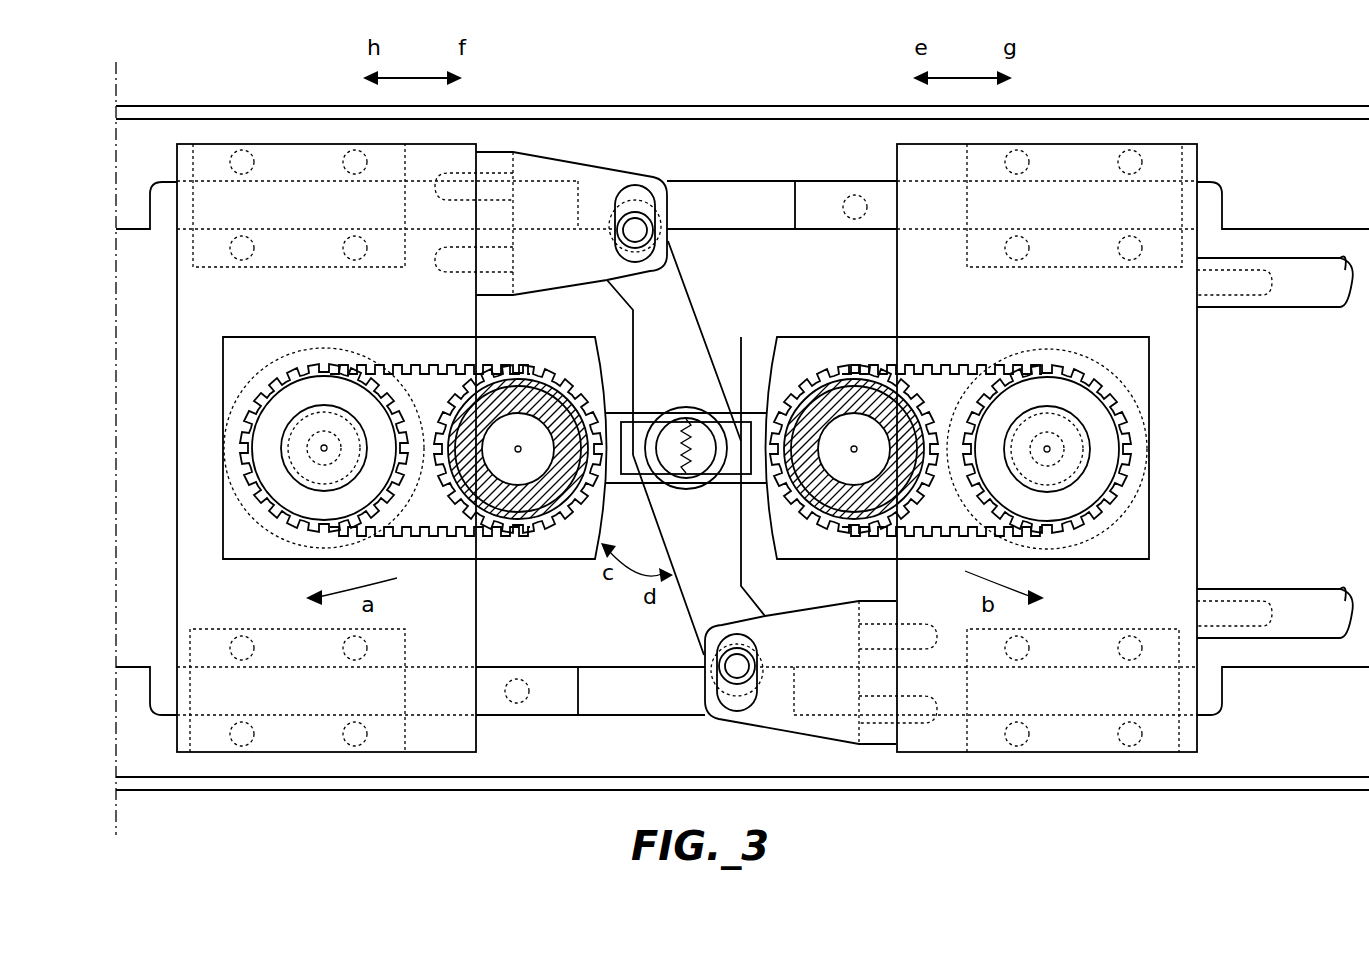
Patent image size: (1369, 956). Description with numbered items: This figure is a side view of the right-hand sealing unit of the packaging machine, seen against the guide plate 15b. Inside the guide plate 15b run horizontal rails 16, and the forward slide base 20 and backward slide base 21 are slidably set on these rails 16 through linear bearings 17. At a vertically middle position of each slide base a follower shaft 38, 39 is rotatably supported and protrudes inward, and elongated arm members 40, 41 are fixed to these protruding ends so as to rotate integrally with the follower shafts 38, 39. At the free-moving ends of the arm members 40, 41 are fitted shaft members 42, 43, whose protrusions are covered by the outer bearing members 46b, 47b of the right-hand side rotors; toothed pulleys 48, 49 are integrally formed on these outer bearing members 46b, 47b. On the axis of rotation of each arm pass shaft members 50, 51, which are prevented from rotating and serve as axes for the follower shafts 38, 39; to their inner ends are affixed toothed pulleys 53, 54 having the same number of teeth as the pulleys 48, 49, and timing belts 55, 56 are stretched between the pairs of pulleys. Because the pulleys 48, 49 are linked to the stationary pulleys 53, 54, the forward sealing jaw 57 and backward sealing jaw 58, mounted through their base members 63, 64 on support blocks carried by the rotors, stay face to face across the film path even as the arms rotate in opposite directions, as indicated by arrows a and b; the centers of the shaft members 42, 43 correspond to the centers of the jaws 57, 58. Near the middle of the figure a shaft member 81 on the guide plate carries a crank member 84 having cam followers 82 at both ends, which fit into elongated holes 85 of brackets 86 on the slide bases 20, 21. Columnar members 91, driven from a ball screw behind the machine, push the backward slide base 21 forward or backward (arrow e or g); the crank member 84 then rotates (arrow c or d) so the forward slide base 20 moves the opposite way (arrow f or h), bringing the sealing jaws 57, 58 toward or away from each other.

The guide plate 15b is at (770, 116).
The rail 16 is at (520, 200).
The linear bearing 17 is at (295, 165).
The slide base 20 is at (190, 470).
The slide base 21 is at (1200, 447).
The follower shaft 38 is at (317, 352).
The follower shaft 39 is at (1060, 345).
The arm member 40 is at (262, 350).
The arm member 41 is at (1125, 350).
The shaft member 42 is at (520, 496).
The shaft member 43 is at (852, 505).
The outer bearing member 46b is at (525, 512).
The outer bearing member 47b is at (850, 495).
The toothed pulley 48 is at (545, 367).
The toothed pulley 49 is at (827, 368).
The shaft member 50 is at (305, 468).
The shaft member 51 is at (1055, 465).
The toothed pulley 53 is at (312, 507).
The toothed pulley 54 is at (1047, 510).
The timing belt 55 is at (445, 365).
The timing belt 56 is at (930, 367).
The sealing jaw 57 is at (670, 489).
The sealing jaw 58 is at (707, 481).
The base member 63 is at (623, 487).
The base member 64 is at (745, 415).
The shaft member 81 is at (683, 418).
The cam follower 82 is at (636, 232).
The crank member 84 is at (688, 318).
The elongated hole 85 is at (650, 200).
The bracket 86 is at (570, 180).
The columnar member 91 is at (1290, 303).